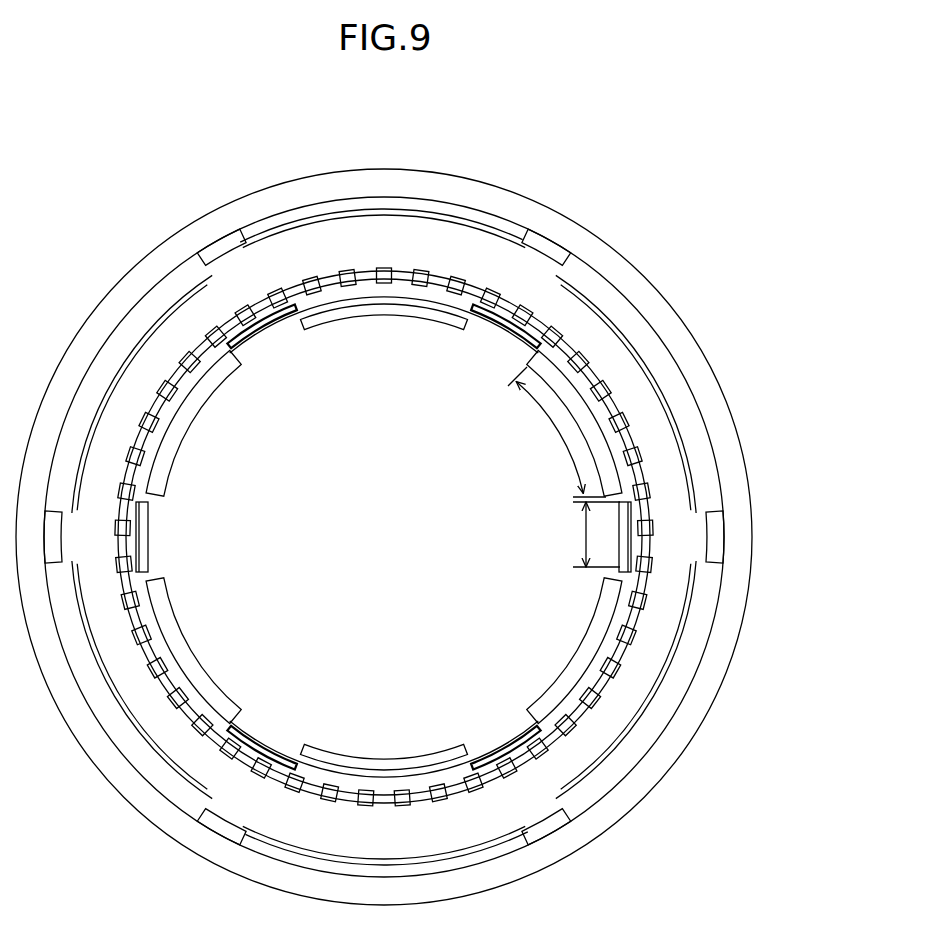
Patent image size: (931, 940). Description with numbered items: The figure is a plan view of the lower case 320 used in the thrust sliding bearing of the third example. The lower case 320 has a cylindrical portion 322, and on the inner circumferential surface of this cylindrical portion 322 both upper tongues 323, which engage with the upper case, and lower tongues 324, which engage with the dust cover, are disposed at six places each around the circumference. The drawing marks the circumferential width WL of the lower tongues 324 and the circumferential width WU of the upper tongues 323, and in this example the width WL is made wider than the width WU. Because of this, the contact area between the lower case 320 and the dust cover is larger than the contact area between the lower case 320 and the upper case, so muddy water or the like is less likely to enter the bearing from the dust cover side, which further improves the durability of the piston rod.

The lower case 320 is at (515, 160).
The cylindrical portion 322 is at (150, 500).
The upper tongue 323 is at (264, 338).
The lower tongue 324 is at (188, 413).
The circumferential width of the lower tongue WL is at (557, 432).
The circumferential width of the upper tongue WU is at (581, 534).